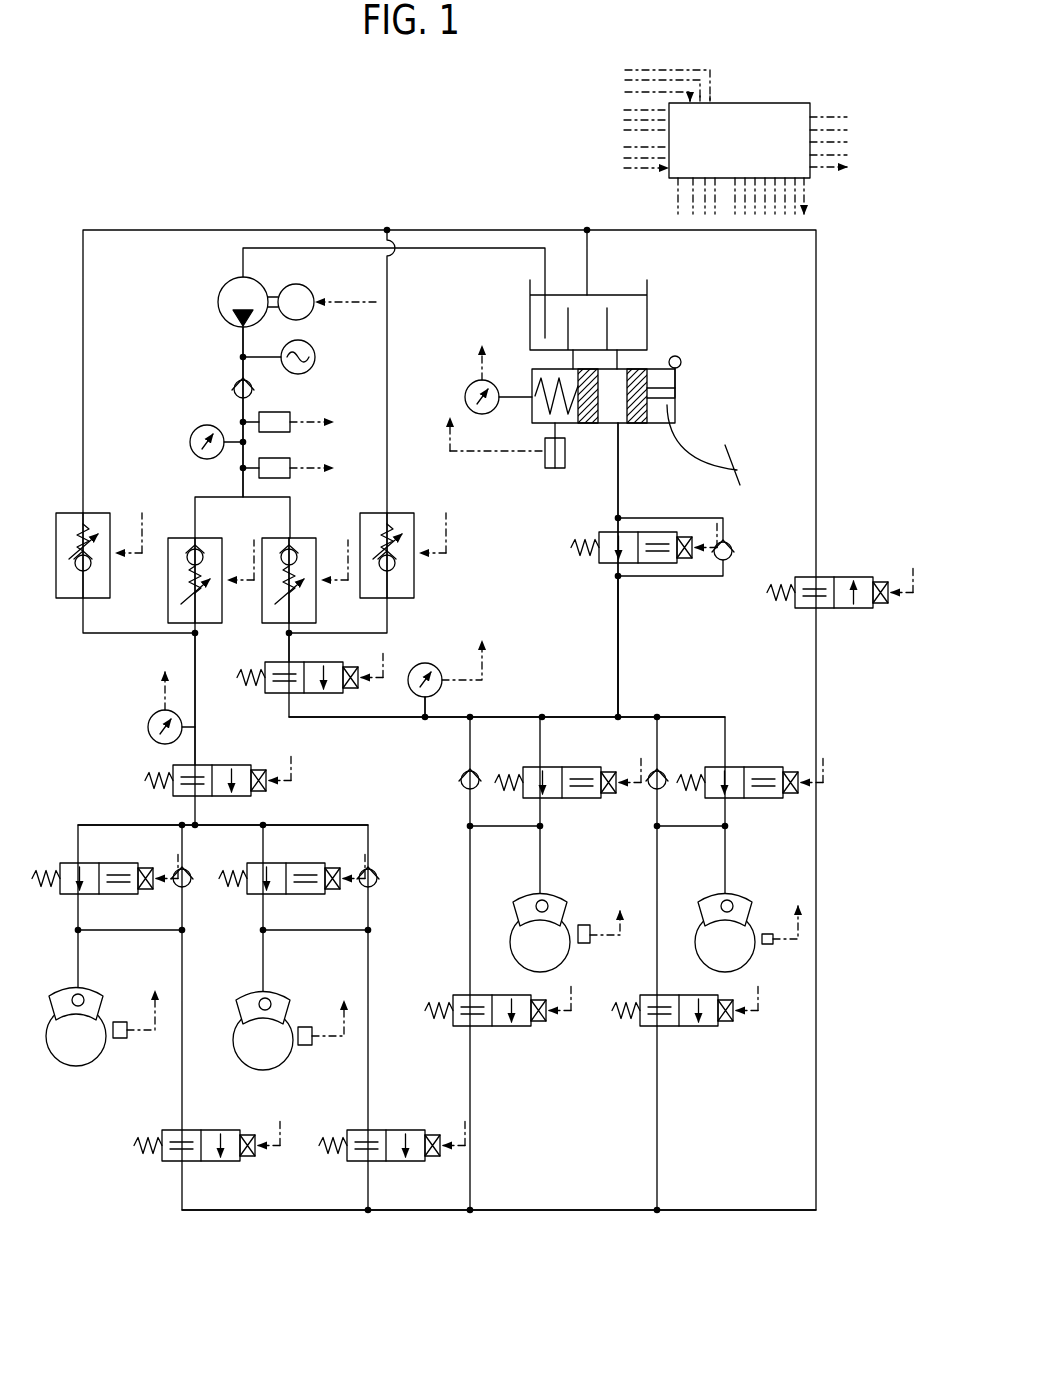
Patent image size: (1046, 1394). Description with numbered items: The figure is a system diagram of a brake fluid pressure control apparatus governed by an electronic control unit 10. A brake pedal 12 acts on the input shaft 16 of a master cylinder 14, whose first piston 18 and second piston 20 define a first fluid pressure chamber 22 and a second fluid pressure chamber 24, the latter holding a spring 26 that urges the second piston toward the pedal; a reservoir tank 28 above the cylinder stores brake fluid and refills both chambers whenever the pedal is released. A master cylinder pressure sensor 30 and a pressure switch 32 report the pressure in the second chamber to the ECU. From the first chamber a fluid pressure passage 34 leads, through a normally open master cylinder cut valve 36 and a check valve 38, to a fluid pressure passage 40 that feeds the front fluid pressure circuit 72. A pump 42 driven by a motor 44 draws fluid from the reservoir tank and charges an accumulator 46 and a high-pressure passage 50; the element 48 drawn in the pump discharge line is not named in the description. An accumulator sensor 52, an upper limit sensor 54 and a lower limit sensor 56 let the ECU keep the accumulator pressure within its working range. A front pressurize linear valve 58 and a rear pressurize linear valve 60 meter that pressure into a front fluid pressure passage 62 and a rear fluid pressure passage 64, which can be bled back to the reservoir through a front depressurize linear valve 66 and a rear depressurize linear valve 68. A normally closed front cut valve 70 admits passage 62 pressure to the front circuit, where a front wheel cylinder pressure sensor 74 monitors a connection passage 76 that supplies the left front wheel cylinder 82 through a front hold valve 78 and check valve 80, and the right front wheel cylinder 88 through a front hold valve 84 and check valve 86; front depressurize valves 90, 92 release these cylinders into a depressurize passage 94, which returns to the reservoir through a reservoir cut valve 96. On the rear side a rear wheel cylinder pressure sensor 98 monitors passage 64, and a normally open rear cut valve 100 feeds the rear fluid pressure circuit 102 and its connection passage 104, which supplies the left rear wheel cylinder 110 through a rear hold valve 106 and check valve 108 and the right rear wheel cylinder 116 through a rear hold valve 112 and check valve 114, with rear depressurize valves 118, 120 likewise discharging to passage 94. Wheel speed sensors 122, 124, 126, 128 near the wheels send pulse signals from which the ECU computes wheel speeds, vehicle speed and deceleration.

The electronic control unit 10 is at (743, 102).
The brake pedal 12 is at (740, 445).
The master cylinder 14 is at (668, 360).
The input shaft 16 is at (672, 405).
The first piston 18 is at (636, 423).
The second piston 20 is at (560, 440).
The first fluid pressure chamber 22 is at (612, 430).
The second fluid pressure chamber 24 is at (532, 420).
The spring 26 is at (540, 365).
The reservoir tank 28 is at (650, 300).
The master cylinder pressure sensor 30 is at (470, 380).
The pressure switch 32 is at (548, 468).
The fluid pressure passage 34 is at (622, 500).
The master cylinder cut valve 36 is at (600, 560).
The check valve 38 is at (723, 562).
The fluid pressure passage 40 is at (620, 700).
The pump 42 is at (222, 288).
The motor 44 is at (312, 290).
The accumulator 46 is at (316, 355).
The check valve 48 is at (237, 380).
The high-pressure passage 50 is at (240, 410).
The accumulator sensor 52 is at (190, 446).
The upper limit sensor 54 is at (290, 413).
The lower limit sensor 56 is at (292, 478).
The front pressurize linear valve 58 is at (298, 538).
The rear pressurize linear valve 60 is at (200, 538).
The front fluid pressure passage 62 is at (288, 645).
The rear fluid pressure passage 64 is at (195, 660).
The front depressurize linear valve 66 is at (392, 513).
The rear depressurize linear valve 68 is at (85, 513).
The front cut valve 70 is at (265, 690).
The front fluid pressure circuit 72 is at (510, 715).
The front wheel cylinder pressure sensor 74 is at (425, 662).
The connection passage 76 is at (446, 719).
The front hold valve 78 is at (746, 767).
The check valve 80 is at (665, 769).
The wheel cylinder 82 is at (736, 893).
The front hold valve 84 is at (556, 767).
The check valve 86 is at (478, 769).
The wheel cylinder 88 is at (553, 895).
The front depressurize valve 90 is at (690, 1028).
The front depressurize valve 92 is at (500, 1028).
The depressurize passage 94 is at (548, 1212).
The reservoir cut valve 96 is at (805, 608).
The rear wheel cylinder pressure sensor 98 is at (152, 718).
The rear cut valve 100 is at (245, 766).
The rear fluid pressure circuit 102 is at (100, 823).
The connection passage 104 is at (283, 824).
The rear hold valve 106 is at (275, 863).
The check valve 108 is at (373, 869).
The wheel cylinder 110 is at (268, 990).
The rear hold valve 112 is at (80, 863).
The check valve 114 is at (187, 869).
The wheel cylinder 116 is at (88, 990).
The rear depressurize valve 118 is at (392, 1130).
The rear depressurize valve 120 is at (210, 1130).
The wheel speed sensor 122 is at (768, 932).
The wheel speed sensor 124 is at (582, 925).
The wheel speed sensor 126 is at (305, 1025).
The wheel speed sensor 128 is at (120, 1020).